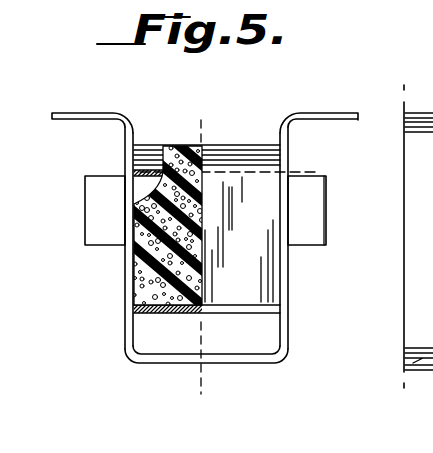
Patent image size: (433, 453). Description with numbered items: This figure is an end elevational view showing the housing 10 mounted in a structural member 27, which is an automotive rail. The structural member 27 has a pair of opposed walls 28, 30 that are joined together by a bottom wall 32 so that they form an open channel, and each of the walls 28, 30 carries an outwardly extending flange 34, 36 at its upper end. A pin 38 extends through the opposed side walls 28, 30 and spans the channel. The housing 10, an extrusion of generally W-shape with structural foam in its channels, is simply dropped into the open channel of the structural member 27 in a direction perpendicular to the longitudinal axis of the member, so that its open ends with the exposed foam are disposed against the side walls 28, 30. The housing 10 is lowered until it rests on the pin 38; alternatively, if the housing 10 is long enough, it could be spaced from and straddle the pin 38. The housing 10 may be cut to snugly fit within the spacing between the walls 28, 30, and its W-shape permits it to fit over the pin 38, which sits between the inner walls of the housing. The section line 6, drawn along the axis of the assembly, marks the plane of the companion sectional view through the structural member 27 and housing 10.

The section line 6- 6 is at (150, 97).
The housing 10 is at (284, 102).
The structural member 27 is at (210, 229).
The opposed wall 28 is at (126, 289).
The opposed wall 30 is at (283, 301).
The bottom wall 32 is at (226, 365).
The flange 34 is at (88, 120).
The flange 36 is at (330, 121).
The pin 38 is at (107, 219).